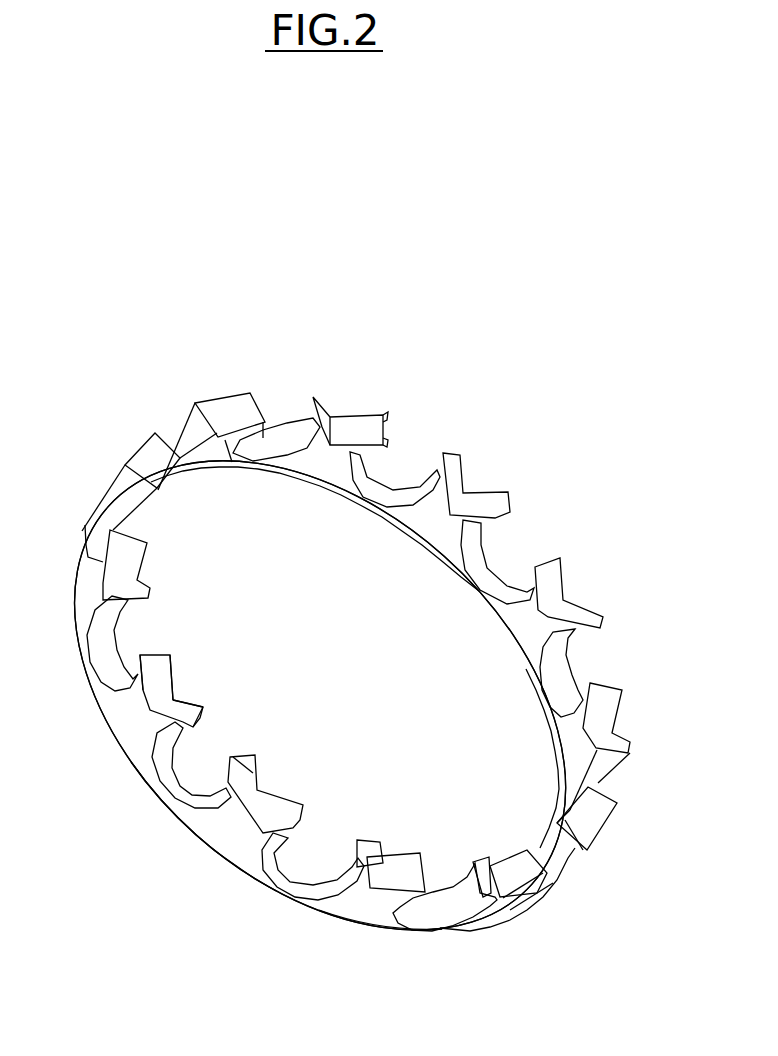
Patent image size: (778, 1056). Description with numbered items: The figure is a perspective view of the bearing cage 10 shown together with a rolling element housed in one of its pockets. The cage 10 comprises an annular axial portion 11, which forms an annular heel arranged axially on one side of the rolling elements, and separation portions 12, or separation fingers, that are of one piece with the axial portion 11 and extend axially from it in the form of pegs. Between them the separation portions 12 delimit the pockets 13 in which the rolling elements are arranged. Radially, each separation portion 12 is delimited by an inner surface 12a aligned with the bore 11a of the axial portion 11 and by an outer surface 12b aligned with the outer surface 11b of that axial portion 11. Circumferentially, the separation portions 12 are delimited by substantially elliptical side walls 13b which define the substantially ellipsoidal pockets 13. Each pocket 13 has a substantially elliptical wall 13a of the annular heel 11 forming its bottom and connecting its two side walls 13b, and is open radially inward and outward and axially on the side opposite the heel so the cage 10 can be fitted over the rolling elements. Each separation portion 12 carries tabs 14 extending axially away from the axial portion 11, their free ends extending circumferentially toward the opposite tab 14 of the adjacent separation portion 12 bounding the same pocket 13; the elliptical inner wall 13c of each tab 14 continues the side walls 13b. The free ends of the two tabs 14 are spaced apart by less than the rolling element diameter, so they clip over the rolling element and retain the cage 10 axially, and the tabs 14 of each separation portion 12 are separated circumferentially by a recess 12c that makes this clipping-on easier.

The cage 10 is at (391, 322).
The annular axial portion 11 is at (382, 937).
The bore 11a is at (373, 502).
The outer surface 11b is at (275, 887).
The separation portion 12 is at (478, 494).
The inner surface 12a is at (217, 465).
The outer surface 12b is at (360, 925).
The recess 12c is at (370, 860).
The pocket 13 is at (170, 436).
The wall 13a is at (170, 773).
The side wall 13b is at (152, 738).
The inner wall 13c is at (195, 727).
The tab 14 is at (320, 403).